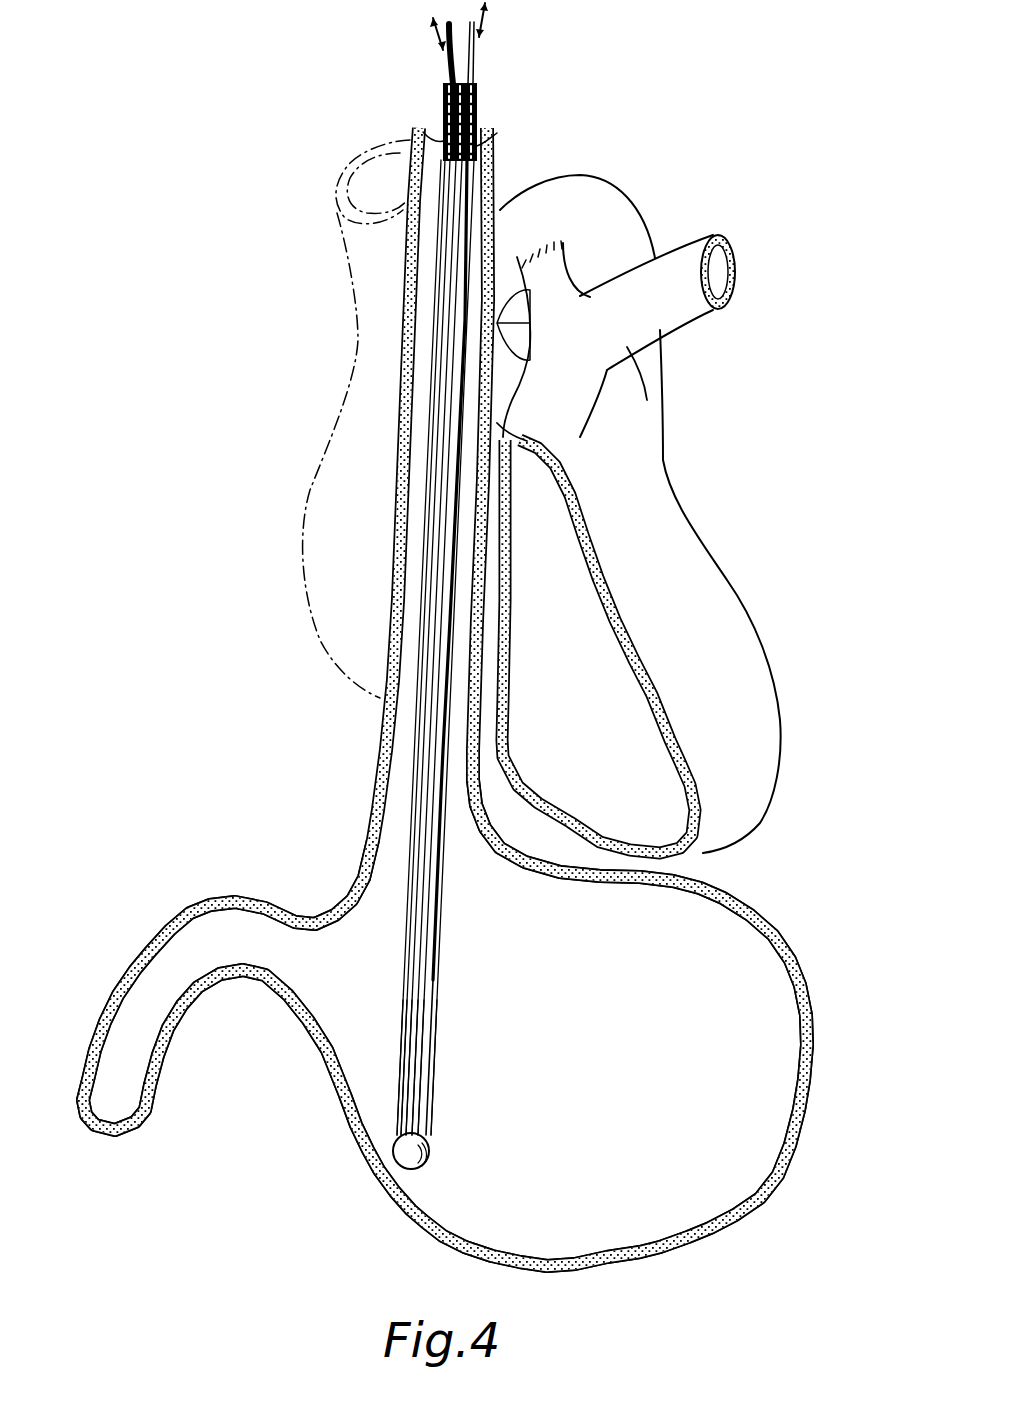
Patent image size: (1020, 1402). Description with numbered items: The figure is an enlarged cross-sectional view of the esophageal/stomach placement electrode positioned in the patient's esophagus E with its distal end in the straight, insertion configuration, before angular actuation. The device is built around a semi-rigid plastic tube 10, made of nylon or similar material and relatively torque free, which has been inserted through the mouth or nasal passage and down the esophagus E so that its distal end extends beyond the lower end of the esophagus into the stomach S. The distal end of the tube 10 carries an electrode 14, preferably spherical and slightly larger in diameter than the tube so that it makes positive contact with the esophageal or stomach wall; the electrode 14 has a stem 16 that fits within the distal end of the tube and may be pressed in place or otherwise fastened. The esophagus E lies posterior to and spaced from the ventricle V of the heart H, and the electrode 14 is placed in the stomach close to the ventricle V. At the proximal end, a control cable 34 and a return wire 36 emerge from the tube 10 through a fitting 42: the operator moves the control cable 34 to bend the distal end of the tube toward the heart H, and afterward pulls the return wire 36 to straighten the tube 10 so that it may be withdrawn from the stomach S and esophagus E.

The tube 10 is at (410, 832).
The electrode 14 is at (429, 1163).
The stem 16 is at (432, 1135).
The control cable 34 is at (450, 58).
The return wire 36 is at (472, 58).
The connector 42 is at (477, 115).
The esophagus E is at (378, 715).
The heart H is at (733, 735).
The ventricle V is at (564, 665).
The stomach S is at (645, 1042).